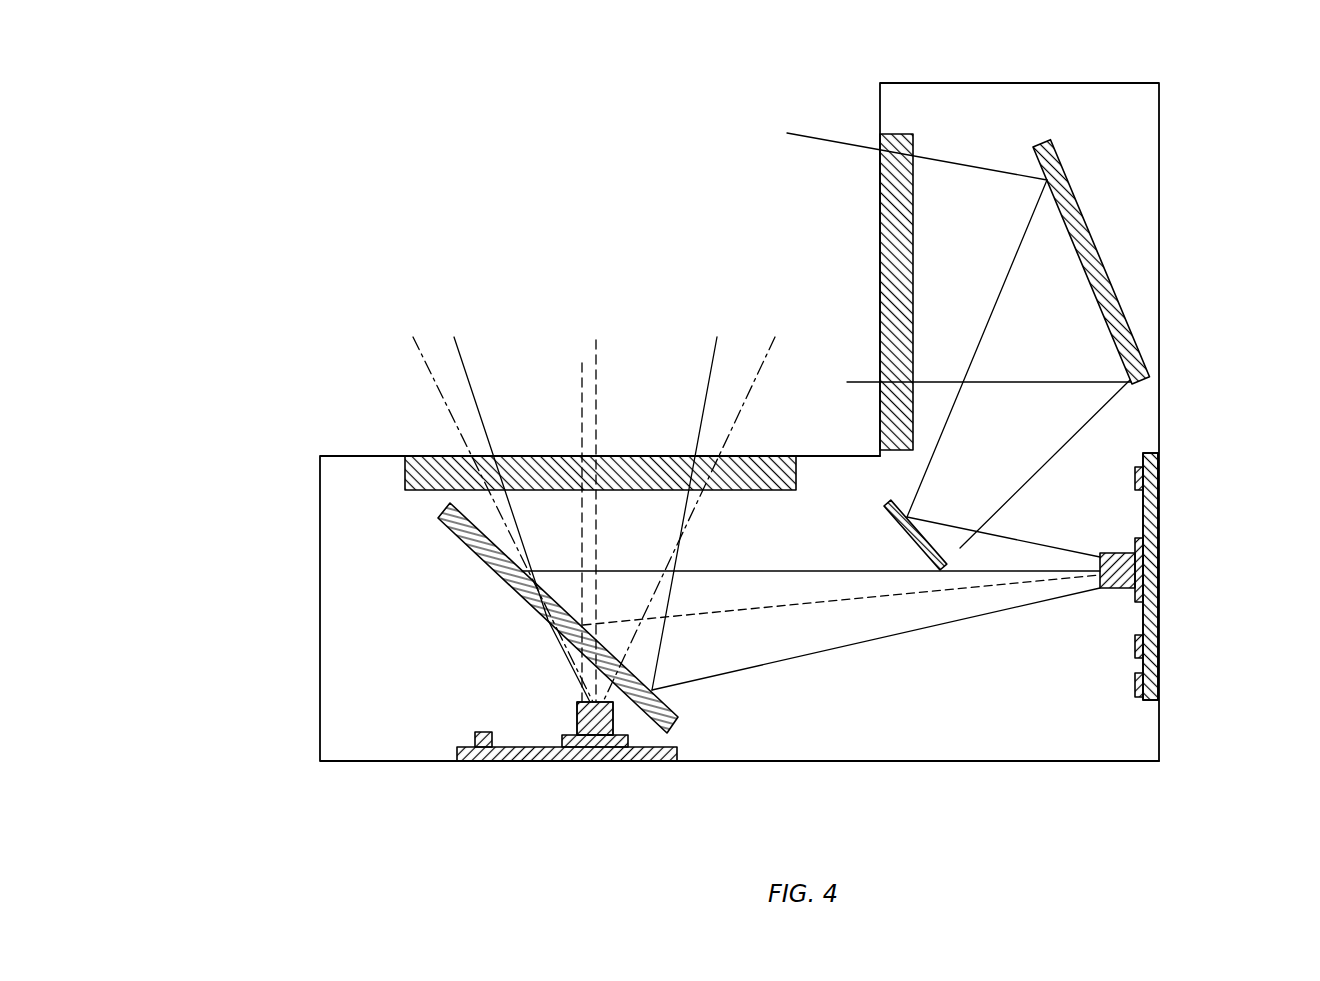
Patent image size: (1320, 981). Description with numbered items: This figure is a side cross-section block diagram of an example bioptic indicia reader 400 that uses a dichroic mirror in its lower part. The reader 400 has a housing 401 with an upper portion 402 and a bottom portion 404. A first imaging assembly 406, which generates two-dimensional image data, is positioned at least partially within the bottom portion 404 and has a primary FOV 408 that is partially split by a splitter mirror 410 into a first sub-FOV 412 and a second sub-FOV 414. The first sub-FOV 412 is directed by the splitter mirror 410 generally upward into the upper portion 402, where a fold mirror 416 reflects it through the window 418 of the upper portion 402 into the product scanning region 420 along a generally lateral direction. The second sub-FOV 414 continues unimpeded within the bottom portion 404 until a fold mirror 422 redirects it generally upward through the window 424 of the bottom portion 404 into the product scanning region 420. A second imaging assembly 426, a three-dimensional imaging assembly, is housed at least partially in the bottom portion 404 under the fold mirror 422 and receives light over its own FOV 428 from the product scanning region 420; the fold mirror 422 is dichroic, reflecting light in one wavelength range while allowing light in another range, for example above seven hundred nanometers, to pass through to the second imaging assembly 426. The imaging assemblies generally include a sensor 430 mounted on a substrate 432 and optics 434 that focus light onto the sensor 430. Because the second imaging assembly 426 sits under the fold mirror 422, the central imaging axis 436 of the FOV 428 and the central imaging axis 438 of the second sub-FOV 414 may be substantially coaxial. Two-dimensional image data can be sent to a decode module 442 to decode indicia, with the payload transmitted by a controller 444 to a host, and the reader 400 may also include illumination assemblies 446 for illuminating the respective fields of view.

The bioptic indicia reader 400 is at (1228, 88).
The housing 401 is at (1158, 637).
The upper portion 402 is at (1192, 265).
The bottom portion 404 is at (288, 601).
The first imaging assembly 406 is at (1118, 597).
The primary FOV 408 is at (1033, 540).
The splitter mirror 410 is at (894, 523).
The first sub-FOV 412 is at (997, 315).
The second sub-FOV 414 is at (793, 567).
The fold mirror 416 is at (1071, 193).
The window 418 is at (913, 233).
The product scanning region 420 is at (530, 311).
The fold mirror 422 is at (448, 530).
The window 424 is at (722, 490).
The second imaging assembly 426 is at (560, 693).
The FOV 428 is at (427, 372).
The sensor 430 is at (1158, 560).
The substrate 432 is at (1158, 497).
The optics 434 is at (1147, 573).
The central imaging axis 436 is at (598, 391).
The central imaging axis 438 is at (580, 390).
The decode module 442 is at (1134, 684).
The controller 444 is at (1134, 648).
The illumination assemblies 446 is at (1158, 478).